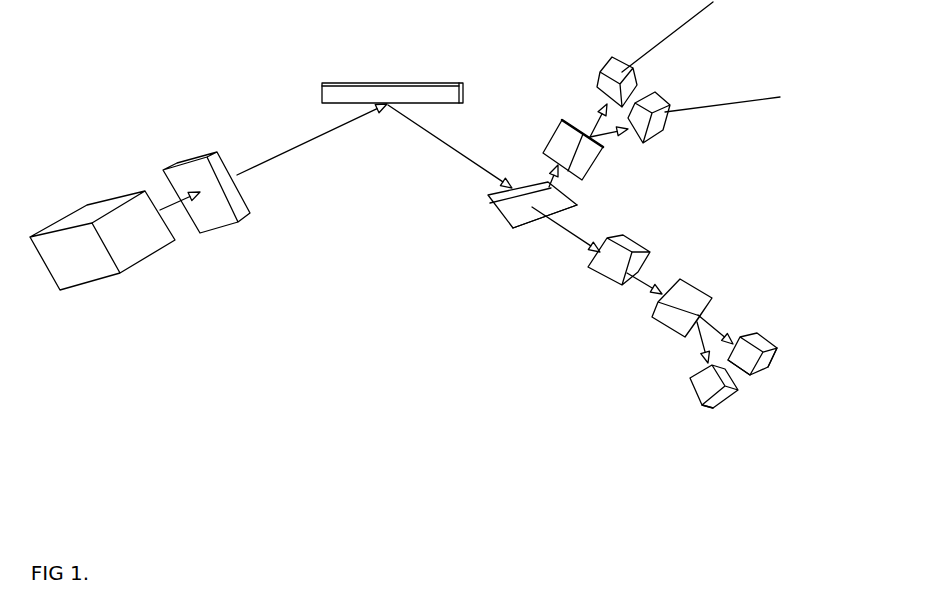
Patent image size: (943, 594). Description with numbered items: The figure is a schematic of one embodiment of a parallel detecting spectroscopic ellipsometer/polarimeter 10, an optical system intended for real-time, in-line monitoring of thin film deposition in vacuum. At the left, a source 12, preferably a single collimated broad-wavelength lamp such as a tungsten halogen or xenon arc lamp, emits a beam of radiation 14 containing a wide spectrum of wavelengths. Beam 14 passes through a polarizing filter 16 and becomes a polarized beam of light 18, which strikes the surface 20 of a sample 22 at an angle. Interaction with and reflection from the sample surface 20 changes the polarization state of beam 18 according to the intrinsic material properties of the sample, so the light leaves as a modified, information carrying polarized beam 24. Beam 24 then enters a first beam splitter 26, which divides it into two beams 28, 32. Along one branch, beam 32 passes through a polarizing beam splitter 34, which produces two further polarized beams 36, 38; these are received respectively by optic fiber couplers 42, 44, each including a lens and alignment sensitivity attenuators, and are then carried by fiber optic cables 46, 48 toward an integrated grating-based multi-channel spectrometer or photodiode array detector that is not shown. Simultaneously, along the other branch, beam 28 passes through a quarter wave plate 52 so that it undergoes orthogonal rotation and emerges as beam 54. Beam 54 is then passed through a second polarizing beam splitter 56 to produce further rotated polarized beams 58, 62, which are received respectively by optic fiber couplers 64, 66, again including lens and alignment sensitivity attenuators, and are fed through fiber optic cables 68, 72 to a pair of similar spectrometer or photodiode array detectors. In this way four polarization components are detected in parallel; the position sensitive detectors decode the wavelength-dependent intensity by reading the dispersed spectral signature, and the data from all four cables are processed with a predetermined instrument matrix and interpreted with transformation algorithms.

The parallel detecting spectroscopic ellipsometer/polarimeter 10 is at (197, 97).
The source 12 is at (78, 262).
The beam of radiation 14 is at (177, 208).
The polarizing filter 16 is at (215, 212).
The polarized beam of light 18 is at (295, 153).
The surface 20 is at (347, 107).
The sample 22 is at (375, 93).
The information carrying polarized beam 24 is at (468, 165).
The first beam splitter 26 is at (520, 218).
The beam 28 is at (563, 230).
The beam 32 is at (547, 170).
The polarizing beam splitter 34 is at (572, 137).
The polarized beam 36 is at (590, 135).
The polarized beam 38 is at (610, 140).
The optic fiber coupler 42 is at (603, 58).
The optic fiber coupler 44 is at (652, 122).
The fiber optic cable 46 is at (690, 25).
The fiber optic cable 48 is at (727, 105).
The quarter wave plate 52 is at (613, 267).
The beam 54 is at (642, 288).
The second polarizing beam splitter 56 is at (675, 327).
The rotated polarized beam 58 is at (750, 330).
The rotated polarized beam 62 is at (712, 298).
The optic fiber coupler 64 is at (753, 363).
The optic fiber coupler 66 is at (728, 397).
The fiber optic cable 68 is at (763, 370).
The fiber optic cable 72 is at (720, 402).